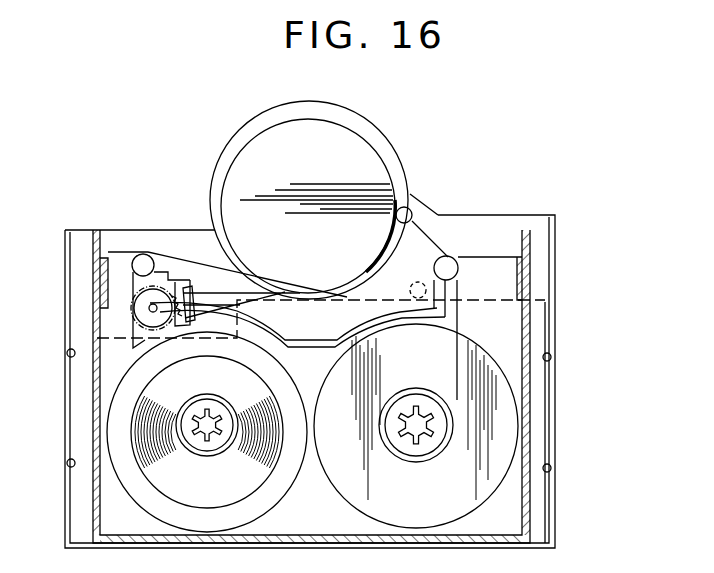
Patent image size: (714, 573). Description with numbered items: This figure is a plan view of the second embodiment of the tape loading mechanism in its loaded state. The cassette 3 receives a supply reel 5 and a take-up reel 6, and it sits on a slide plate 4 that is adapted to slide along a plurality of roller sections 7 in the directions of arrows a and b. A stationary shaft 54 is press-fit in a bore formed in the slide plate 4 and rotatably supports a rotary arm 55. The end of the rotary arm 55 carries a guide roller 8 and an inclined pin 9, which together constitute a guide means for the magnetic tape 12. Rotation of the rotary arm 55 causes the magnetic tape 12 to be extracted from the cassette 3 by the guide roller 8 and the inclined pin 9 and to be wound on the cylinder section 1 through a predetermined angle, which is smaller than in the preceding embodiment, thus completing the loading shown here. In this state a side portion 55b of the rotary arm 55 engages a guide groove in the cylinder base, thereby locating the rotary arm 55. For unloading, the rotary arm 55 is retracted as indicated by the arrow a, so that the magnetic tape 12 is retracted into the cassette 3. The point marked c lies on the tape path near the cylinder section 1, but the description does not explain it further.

The cylinder section 1 is at (245, 160).
The cassette 3 is at (510, 513).
The slide plate 4 is at (73, 352).
The supply reel 5 is at (135, 460).
The take-up reel 6 is at (502, 432).
The roller sections 7 is at (67, 356).
The guide roller 8 is at (411, 209).
The inclined pin 9 is at (395, 198).
The magnetic tape 12 is at (448, 255).
The stationary shaft 54 is at (212, 300).
The rotary arm 55 is at (222, 292).
The side portion 55b is at (318, 288).
The arrow a is at (671, 370).
The arrow b is at (426, 282).
The point c is at (401, 276).